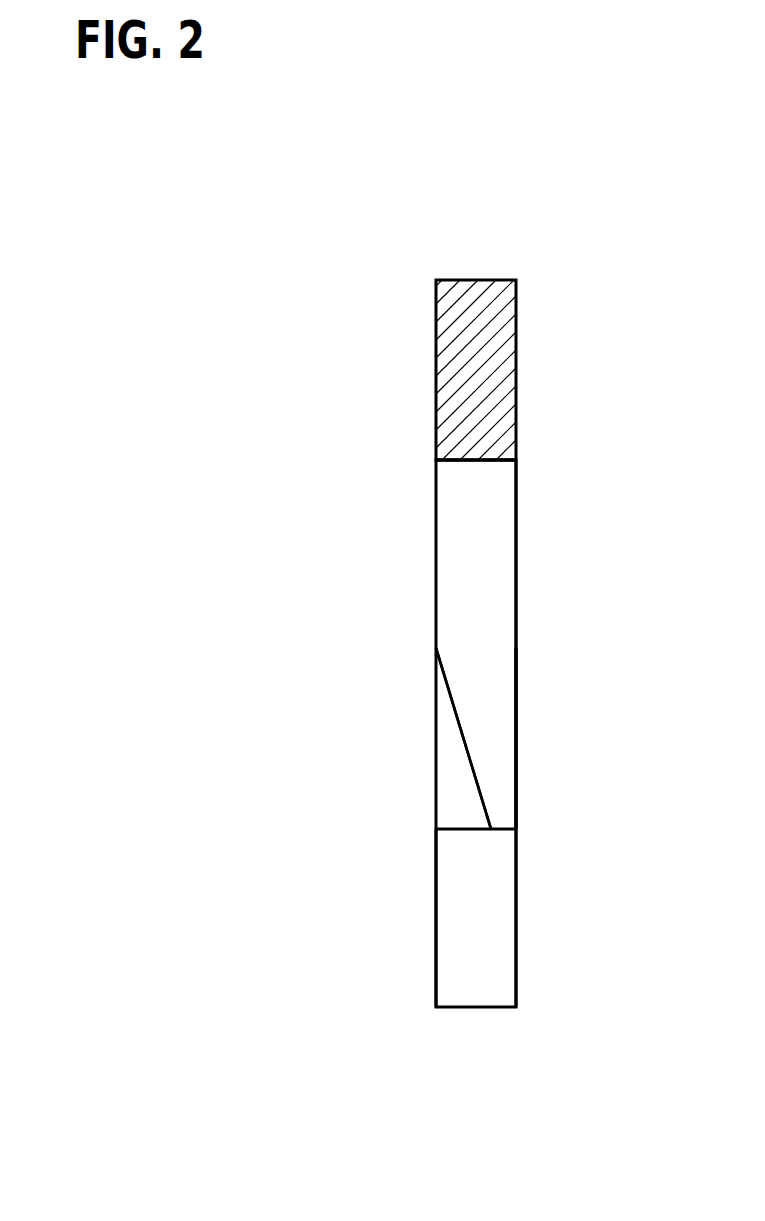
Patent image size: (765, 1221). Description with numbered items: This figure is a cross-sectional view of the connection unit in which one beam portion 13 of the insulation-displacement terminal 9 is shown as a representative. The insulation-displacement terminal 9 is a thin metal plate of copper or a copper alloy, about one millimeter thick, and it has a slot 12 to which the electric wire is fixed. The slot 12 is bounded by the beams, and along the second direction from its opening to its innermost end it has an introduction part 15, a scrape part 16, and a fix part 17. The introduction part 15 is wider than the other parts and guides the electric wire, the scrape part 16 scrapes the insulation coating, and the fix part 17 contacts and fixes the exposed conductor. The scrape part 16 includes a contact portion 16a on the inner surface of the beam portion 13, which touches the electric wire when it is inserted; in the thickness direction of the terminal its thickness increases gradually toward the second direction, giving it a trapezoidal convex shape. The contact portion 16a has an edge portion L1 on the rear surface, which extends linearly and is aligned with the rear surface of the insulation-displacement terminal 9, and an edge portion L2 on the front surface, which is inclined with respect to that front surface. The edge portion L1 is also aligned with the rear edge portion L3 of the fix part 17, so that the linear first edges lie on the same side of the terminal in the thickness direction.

The insulation-displacement terminal 9 is at (520, 318).
The slot 12 is at (476, 994).
The beam portion 13 is at (520, 887).
The introduction part 15 is at (437, 917).
The scrape part 16 is at (447, 724).
The contact portion 16a is at (497, 733).
The fix part 17 is at (498, 523).
The edge portion L1 is at (517, 663).
The edge portion L2 is at (463, 746).
The rear edge portion L3 is at (517, 565).